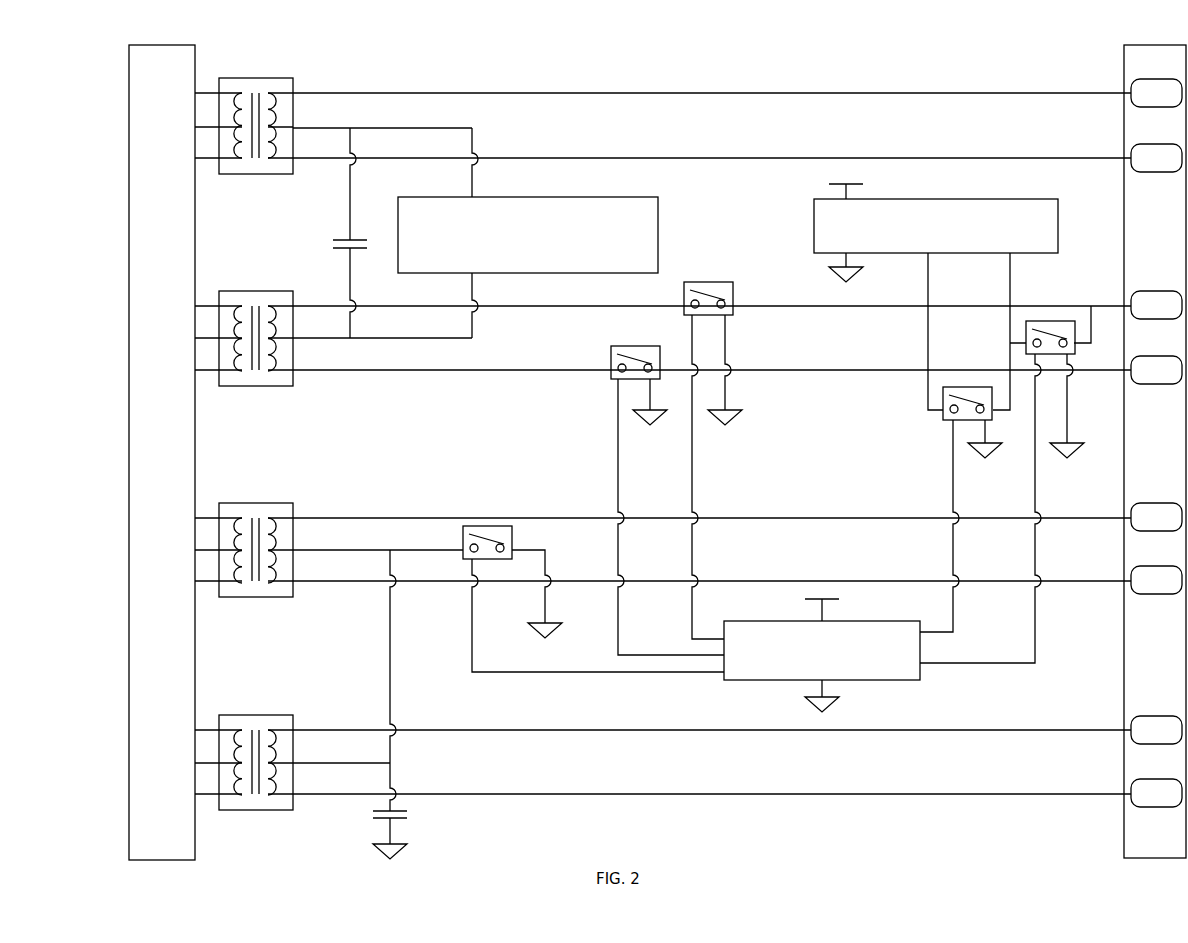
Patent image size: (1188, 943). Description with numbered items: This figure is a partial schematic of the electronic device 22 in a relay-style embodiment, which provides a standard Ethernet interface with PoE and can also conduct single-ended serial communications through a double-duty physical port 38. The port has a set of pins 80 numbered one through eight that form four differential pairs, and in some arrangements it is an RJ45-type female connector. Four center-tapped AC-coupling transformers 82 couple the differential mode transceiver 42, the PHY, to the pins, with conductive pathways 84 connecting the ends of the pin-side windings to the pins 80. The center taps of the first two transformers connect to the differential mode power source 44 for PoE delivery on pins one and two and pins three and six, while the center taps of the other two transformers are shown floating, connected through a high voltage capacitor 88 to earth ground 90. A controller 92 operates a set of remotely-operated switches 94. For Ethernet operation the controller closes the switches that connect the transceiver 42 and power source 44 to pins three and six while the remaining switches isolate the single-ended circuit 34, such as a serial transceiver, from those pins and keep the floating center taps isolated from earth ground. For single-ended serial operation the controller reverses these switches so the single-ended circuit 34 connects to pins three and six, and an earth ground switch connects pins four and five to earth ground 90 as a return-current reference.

The electronic device 22 is at (98, 101).
The differential mode transceiver 42 is at (138, 794).
The pins 80 is at (1126, 448).
The physical port 38 is at (1124, 826).
The conductive pathways 84 is at (678, 81).
The transformers 82 is at (262, 483).
The differential mode power source 44 is at (495, 233).
The single-ended circuit 34 is at (936, 297).
The controller 92 is at (822, 655).
The switches 94 is at (789, 434).
The high voltage capacitor 88 is at (428, 823).
The earth ground 90 is at (397, 850).